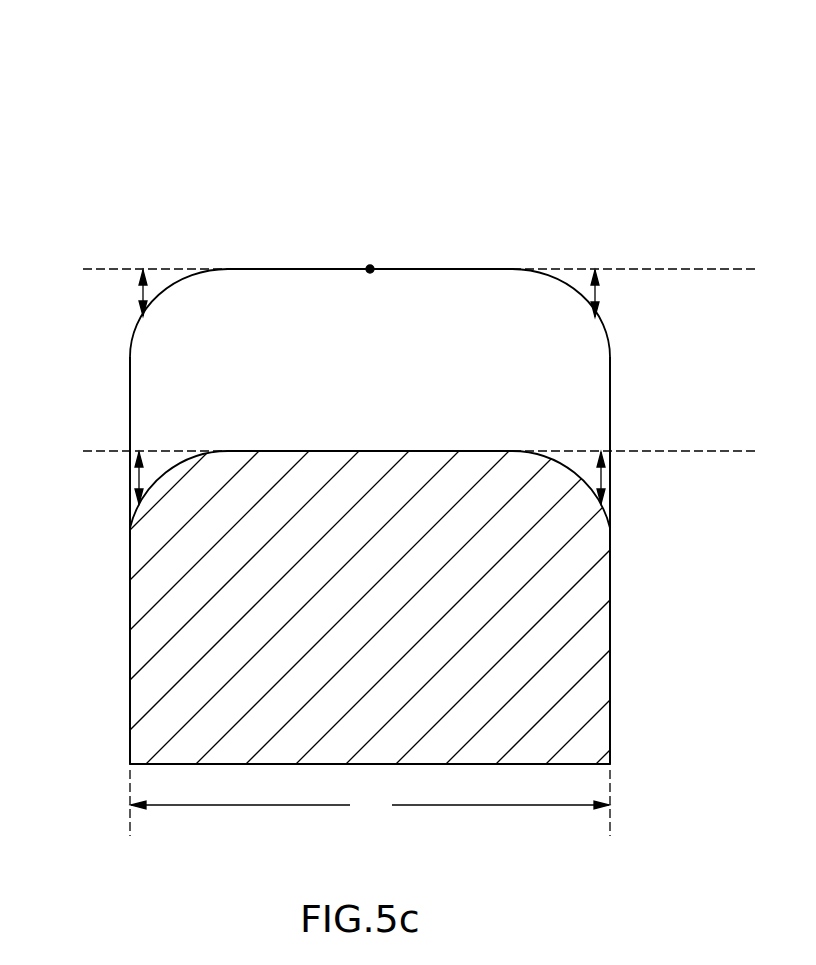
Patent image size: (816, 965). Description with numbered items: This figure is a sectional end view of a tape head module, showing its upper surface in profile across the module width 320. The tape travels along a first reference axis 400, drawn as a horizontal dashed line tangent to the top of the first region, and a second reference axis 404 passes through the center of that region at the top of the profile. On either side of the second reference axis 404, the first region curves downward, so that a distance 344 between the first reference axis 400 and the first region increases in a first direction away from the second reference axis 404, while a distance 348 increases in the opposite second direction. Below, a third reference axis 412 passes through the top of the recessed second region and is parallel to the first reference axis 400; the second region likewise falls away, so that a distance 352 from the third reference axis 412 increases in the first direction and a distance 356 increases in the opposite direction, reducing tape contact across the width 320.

The second reference axis 404 is at (368, 267).
The first reference axis 400 is at (730, 273).
The third reference axis 412 is at (737, 455).
The distance 348 is at (137, 292).
The distance 344 is at (600, 292).
The distance 356 is at (135, 479).
The distance 352 is at (606, 478).
The width 320 is at (370, 803).